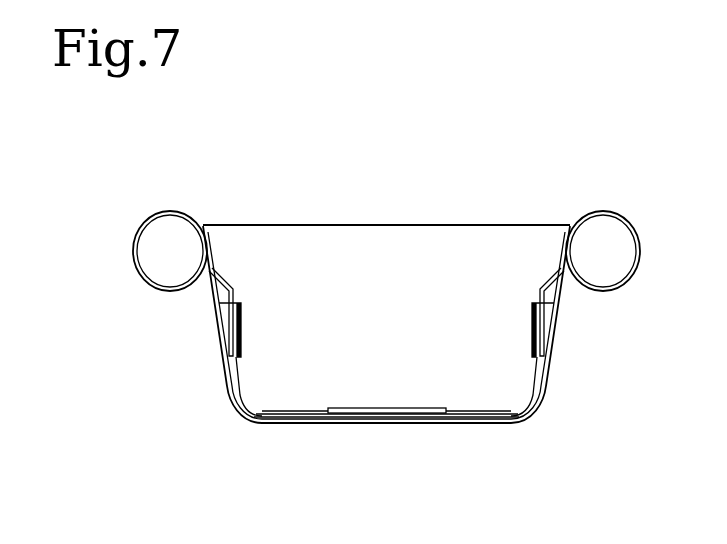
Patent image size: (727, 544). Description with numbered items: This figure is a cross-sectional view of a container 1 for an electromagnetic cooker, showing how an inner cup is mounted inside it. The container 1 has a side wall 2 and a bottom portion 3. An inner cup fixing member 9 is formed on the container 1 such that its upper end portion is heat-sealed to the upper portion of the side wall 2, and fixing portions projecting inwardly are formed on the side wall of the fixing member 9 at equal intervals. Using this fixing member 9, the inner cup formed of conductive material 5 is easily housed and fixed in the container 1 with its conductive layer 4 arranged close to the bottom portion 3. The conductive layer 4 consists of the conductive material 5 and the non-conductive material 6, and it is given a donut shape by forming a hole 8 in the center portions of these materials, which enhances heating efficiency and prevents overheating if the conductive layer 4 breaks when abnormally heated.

The container 1 is at (521, 181).
The side wall 2 is at (553, 332).
The bottom portion 3 is at (403, 425).
The conductive layer 4 is at (337, 363).
The conductive material 5 is at (287, 412).
The non-conductive material 6 is at (318, 411).
The hole 8 is at (397, 408).
The inner cup fixing member 9 is at (232, 298).